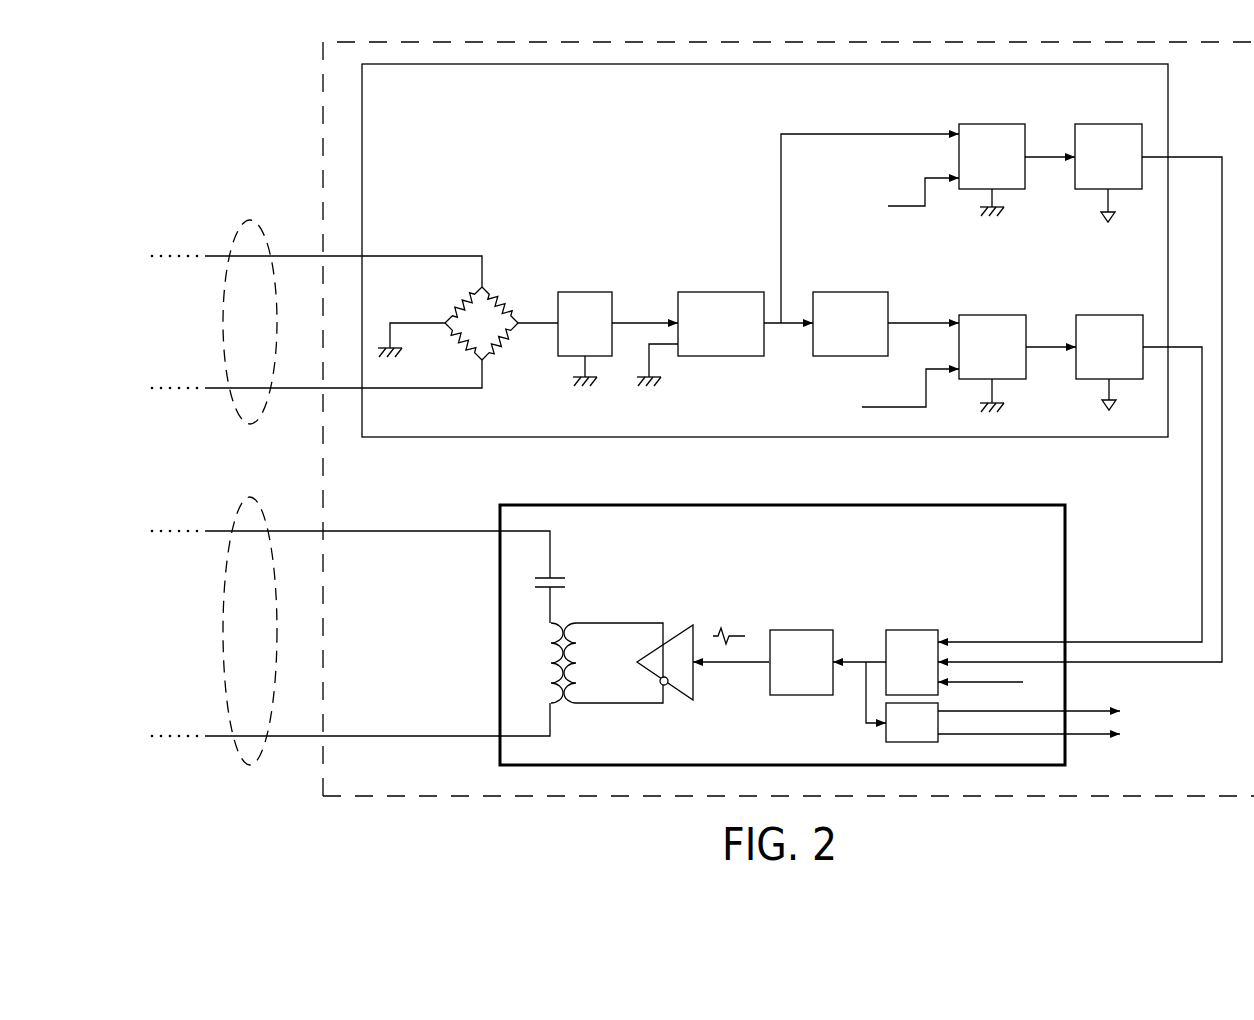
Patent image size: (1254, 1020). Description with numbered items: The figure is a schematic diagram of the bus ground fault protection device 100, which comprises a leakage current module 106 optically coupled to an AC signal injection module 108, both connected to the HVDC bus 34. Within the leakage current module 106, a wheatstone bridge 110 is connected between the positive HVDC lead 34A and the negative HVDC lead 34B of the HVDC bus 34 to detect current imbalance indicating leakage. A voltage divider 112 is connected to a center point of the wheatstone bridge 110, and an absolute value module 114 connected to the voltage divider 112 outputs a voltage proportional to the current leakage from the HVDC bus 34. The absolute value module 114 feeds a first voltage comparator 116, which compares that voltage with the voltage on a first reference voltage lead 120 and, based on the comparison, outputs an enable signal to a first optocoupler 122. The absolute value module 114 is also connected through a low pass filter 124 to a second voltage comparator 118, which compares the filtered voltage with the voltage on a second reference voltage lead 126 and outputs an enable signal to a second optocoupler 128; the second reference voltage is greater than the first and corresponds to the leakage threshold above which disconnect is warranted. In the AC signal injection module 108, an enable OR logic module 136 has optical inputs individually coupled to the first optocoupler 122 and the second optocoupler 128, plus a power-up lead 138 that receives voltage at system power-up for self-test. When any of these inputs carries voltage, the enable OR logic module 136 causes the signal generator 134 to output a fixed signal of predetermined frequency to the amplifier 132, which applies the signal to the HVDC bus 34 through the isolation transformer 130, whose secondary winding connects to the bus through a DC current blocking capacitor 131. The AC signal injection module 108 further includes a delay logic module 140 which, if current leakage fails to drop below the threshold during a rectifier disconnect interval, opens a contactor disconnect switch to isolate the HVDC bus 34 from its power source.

The HVDC bus 34 is at (250, 222).
The positive HVDC lead 34A is at (302, 256).
The negative HVDC lead 34B is at (298, 388).
The bus ground fault protection device 100 is at (280, 800).
The leakage current module 106 is at (433, 111).
The AC signal injection module 108 is at (573, 539).
The wheatstone bridge 110 is at (509, 288).
The voltage divider 112 is at (582, 292).
The absolute value module 114 is at (700, 292).
The first voltage comparator 116 is at (997, 124).
The second voltage comparator 118 is at (995, 315).
The first reference voltage lead 120 is at (898, 206).
The first optocoupler 122 is at (1110, 124).
The low pass filter 124 is at (845, 292).
The second reference voltage lead 126 is at (885, 407).
The second optocoupler 128 is at (1108, 315).
The isolation transformer 130 is at (575, 708).
The DC current blocking capacitor 131 is at (585, 579).
The amplifier 132 is at (682, 625).
The signal generator 134 is at (797, 630).
The enable OR logic module 136 is at (912, 630).
The power-up lead 138 is at (988, 682).
The delay logic module 140 is at (886, 730).